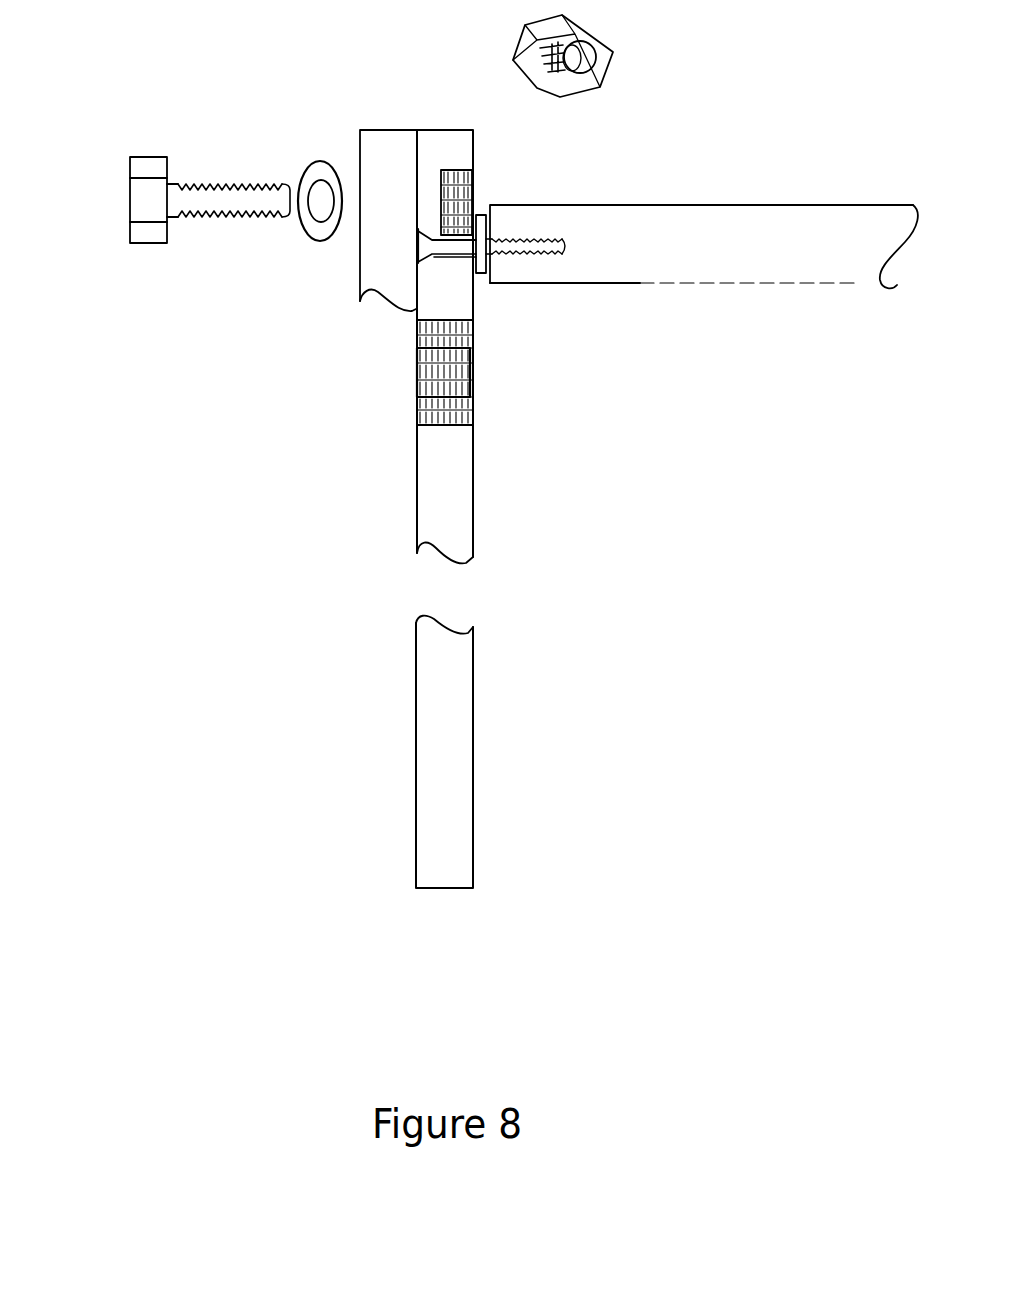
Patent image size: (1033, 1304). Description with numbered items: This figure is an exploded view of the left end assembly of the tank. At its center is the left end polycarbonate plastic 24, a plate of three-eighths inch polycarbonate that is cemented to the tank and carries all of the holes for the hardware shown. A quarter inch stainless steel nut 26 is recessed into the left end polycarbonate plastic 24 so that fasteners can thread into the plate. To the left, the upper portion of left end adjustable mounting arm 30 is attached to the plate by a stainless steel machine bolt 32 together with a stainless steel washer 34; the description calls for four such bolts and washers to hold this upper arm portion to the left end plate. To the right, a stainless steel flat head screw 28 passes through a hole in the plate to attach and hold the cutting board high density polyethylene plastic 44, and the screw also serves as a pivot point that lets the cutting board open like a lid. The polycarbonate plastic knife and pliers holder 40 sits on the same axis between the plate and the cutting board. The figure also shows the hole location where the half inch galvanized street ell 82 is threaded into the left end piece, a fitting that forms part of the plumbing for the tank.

The left end polycarbonate plastic 24 is at (440, 512).
The quarter inch stainless steel nut 26 is at (450, 170).
The stainless steel flat head screw 28 is at (500, 242).
The upper portion of left end adjustable mounting arm 30 is at (385, 253).
The stainless steel machine bolt 32 is at (143, 207).
The stainless steel washer 34 is at (318, 232).
The polycarbonate plastic knife and pliers holder 40 is at (480, 215).
The cutting board high density polyethylene plastic 44 is at (725, 250).
The half inch galvanized street ell 82 is at (447, 375).